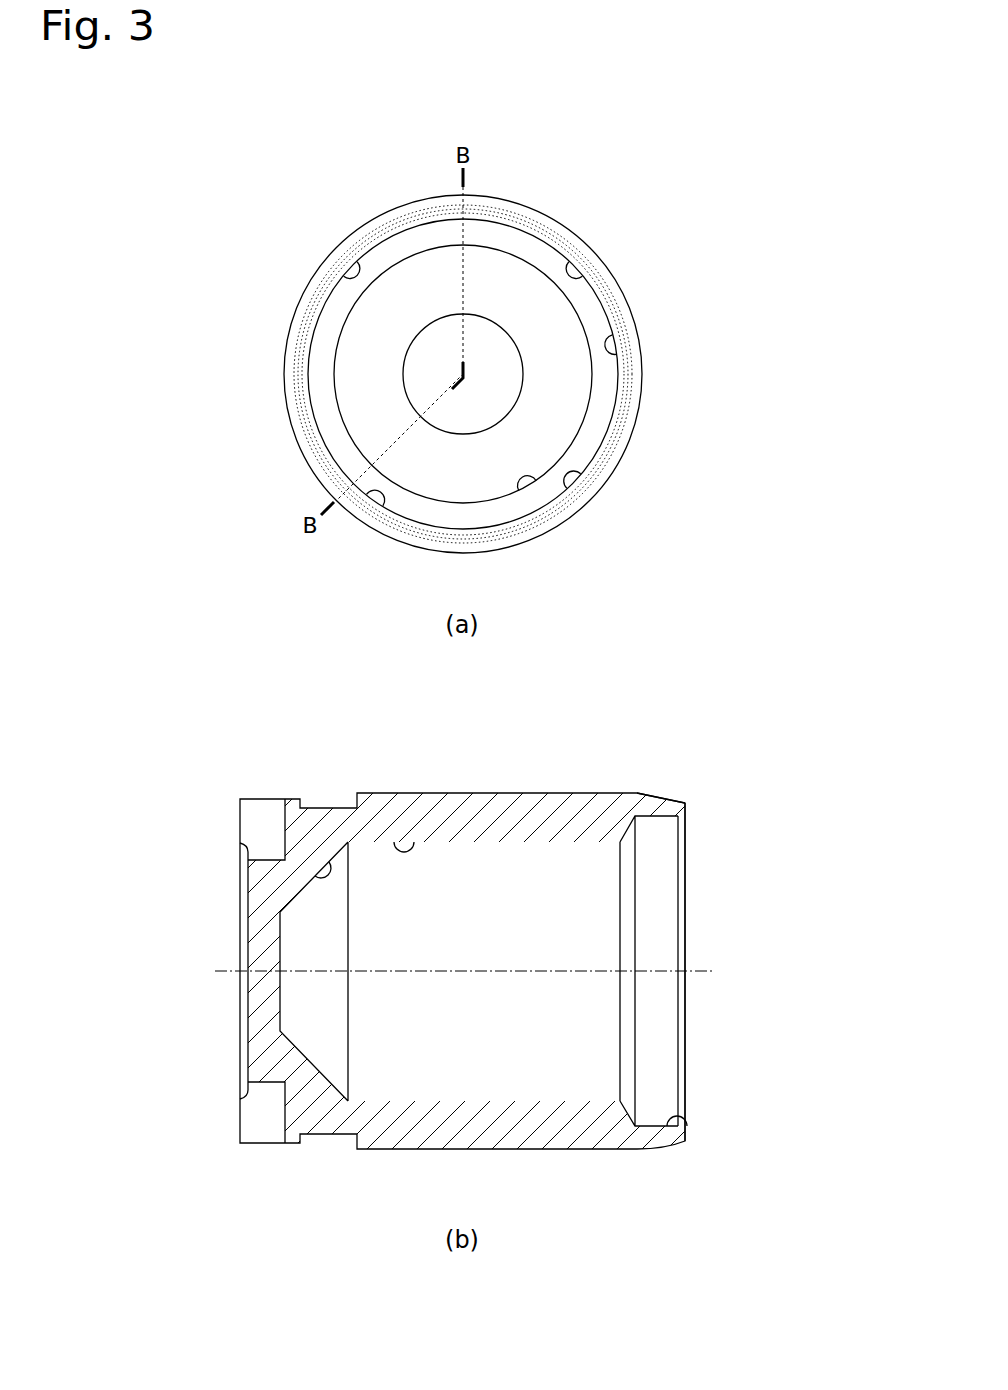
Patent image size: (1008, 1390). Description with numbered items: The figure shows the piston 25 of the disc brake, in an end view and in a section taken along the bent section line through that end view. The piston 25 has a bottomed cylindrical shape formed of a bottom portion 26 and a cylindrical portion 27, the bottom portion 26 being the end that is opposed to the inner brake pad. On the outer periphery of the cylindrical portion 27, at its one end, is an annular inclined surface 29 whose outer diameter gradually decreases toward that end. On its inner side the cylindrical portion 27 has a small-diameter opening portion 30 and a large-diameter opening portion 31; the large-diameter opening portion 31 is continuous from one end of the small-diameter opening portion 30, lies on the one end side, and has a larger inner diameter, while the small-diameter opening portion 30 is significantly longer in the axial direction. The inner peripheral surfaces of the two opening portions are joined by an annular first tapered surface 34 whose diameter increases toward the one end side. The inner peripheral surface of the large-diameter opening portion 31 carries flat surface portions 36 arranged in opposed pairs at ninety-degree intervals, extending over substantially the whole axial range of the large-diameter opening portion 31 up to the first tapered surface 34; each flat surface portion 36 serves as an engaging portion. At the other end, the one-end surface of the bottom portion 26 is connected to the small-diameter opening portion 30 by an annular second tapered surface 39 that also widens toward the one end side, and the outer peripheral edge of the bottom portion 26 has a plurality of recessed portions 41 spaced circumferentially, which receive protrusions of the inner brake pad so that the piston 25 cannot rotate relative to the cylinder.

The piston 25 is at (499, 185).
The bottom portion 26 is at (256, 947).
The cylindrical portion 27 is at (563, 237).
The inclined surface 29 is at (655, 830).
The small-diameter opening portion 30 is at (523, 492).
The large-diameter opening portion 31 is at (620, 352).
The first tapered surface 34 is at (603, 417).
The flat surface portion 36 is at (345, 268).
The second tapered surface 39 is at (423, 283).
The recessed portion 41 is at (280, 1122).